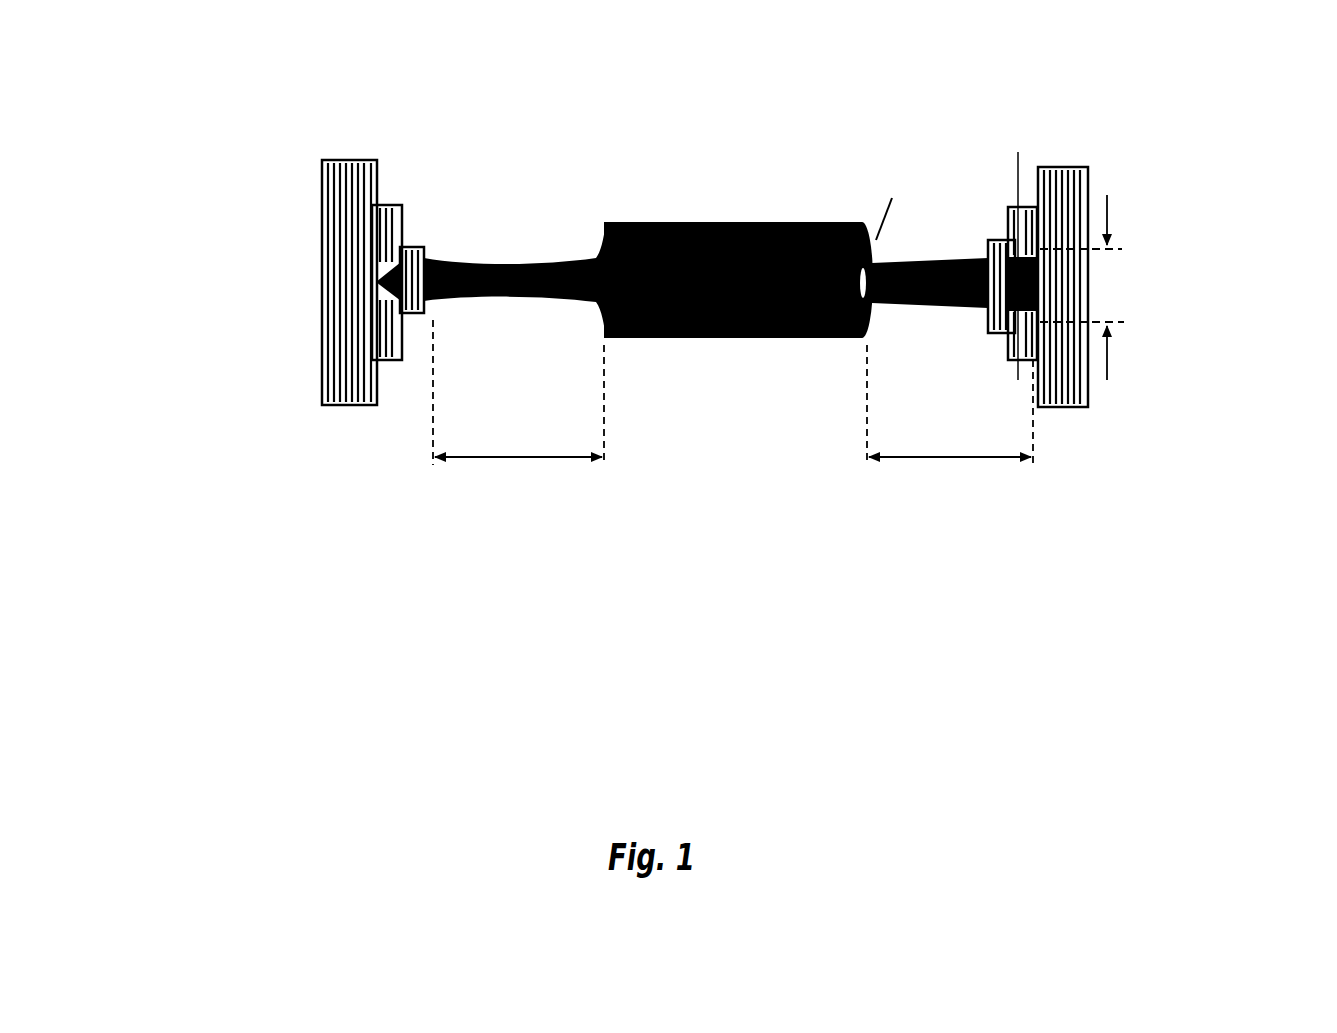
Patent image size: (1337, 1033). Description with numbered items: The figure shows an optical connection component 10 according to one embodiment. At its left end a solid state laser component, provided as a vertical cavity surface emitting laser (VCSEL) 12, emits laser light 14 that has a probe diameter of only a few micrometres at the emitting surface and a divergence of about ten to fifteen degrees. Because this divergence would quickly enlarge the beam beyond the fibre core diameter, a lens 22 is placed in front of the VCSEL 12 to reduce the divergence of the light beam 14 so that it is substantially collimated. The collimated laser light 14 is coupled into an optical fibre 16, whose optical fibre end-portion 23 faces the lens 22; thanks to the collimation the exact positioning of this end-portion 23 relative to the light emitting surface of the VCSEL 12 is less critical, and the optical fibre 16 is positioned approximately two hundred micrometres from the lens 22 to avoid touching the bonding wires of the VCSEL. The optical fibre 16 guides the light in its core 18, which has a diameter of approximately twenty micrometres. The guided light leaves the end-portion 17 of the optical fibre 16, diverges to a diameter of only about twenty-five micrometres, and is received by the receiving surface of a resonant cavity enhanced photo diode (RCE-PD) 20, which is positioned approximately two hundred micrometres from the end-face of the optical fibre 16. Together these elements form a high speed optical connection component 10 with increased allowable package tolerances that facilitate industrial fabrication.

The optical connection component 10 is at (766, 106).
The vertical cavity surface emitting laser (VCSEL) 12 is at (340, 128).
The laser light 14 is at (487, 260).
The optical fibre 16 is at (750, 213).
The end-portion of the optical fibre 17 is at (878, 263).
The core 18 is at (662, 222).
The resonant cavity enhanced photo diode (RCE-PD) 20 is at (1090, 162).
The lens 22 is at (428, 257).
The optical fibre end-portion 23 is at (602, 255).